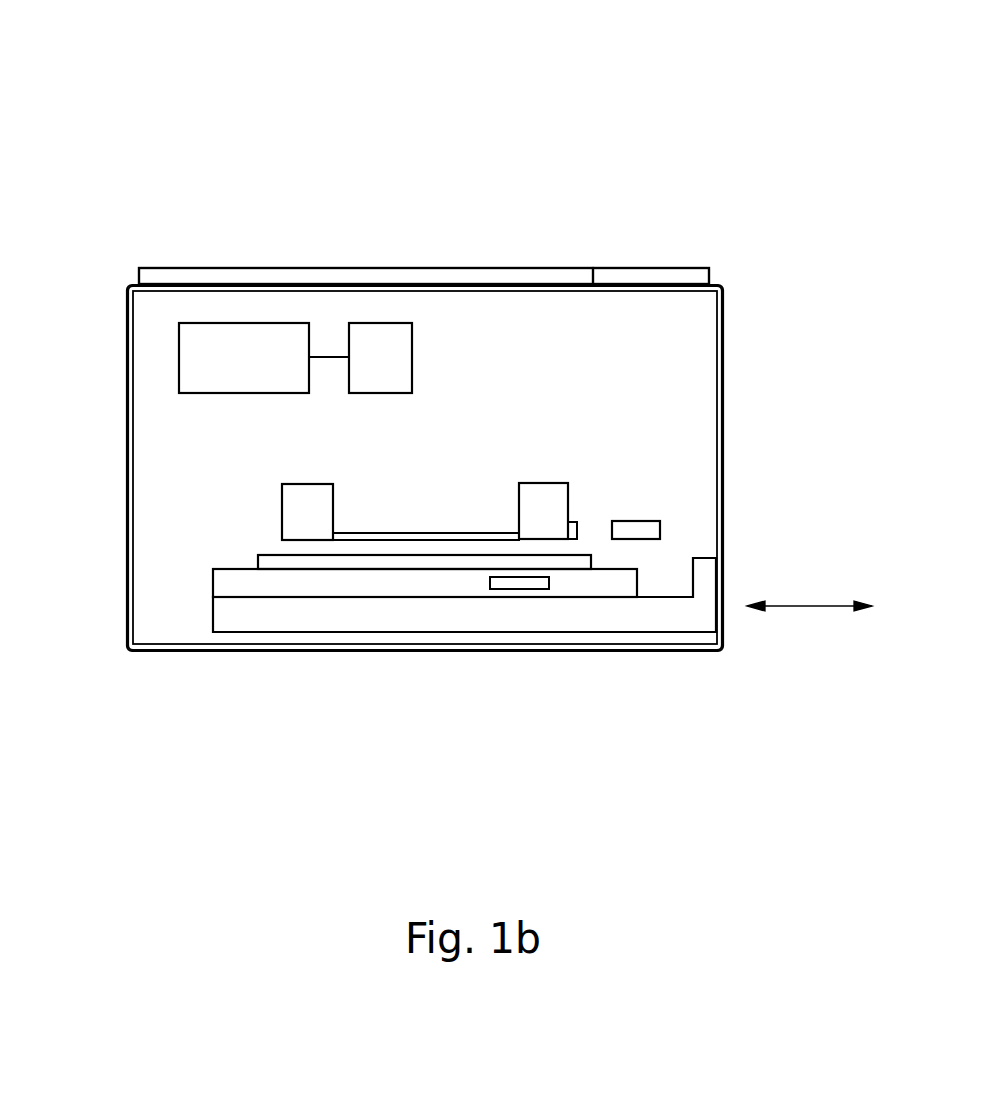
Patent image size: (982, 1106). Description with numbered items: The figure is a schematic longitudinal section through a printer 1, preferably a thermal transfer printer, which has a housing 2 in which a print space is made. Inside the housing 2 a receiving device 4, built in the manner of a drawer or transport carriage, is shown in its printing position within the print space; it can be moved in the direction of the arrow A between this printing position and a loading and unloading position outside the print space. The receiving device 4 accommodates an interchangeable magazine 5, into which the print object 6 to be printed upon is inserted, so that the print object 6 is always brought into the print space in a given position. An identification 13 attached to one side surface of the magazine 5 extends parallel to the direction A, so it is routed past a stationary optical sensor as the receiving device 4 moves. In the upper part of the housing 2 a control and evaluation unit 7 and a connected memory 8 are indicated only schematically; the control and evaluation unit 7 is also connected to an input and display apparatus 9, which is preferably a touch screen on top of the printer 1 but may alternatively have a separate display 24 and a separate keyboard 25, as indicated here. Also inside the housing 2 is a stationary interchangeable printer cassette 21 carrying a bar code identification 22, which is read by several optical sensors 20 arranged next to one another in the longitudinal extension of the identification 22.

The printer 1 is at (634, 686).
The housing 2 is at (170, 652).
The receiving device 4 is at (690, 614).
The magazine 5 is at (558, 582).
The print object 6 is at (413, 559).
The control and evaluation unit 7 is at (247, 345).
The electronic component 8 is at (376, 352).
The input and display apparatus 9 is at (547, 205).
The identification 13 is at (510, 582).
The optical sensors 20 is at (642, 531).
The printer cassette 21 is at (250, 487).
The identification 22 is at (572, 530).
The display 24 is at (471, 275).
The keyboard 25 is at (625, 275).
The direction of movement A is at (807, 610).